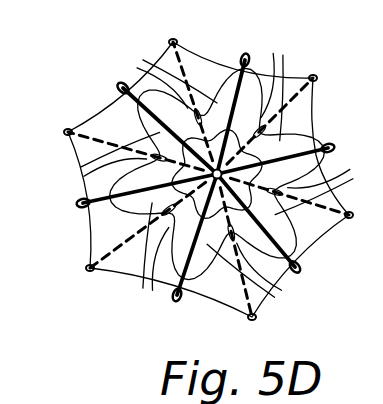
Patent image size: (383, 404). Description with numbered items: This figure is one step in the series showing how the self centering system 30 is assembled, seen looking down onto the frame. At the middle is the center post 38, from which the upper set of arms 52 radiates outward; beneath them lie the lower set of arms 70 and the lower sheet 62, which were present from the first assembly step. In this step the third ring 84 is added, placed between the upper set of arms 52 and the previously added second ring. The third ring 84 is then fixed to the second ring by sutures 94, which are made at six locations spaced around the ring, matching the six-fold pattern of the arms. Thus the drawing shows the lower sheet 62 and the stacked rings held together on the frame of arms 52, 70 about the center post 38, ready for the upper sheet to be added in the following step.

The stent graft prosthesis 30 is at (111, 203).
The center post 38 is at (123, 163).
The upper set of arms 52 is at (100, 247).
The lower sheet 62 is at (226, 86).
The lower set of arms 70 is at (170, 82).
The third ring 84 is at (313, 140).
The sutures 94 is at (271, 58).